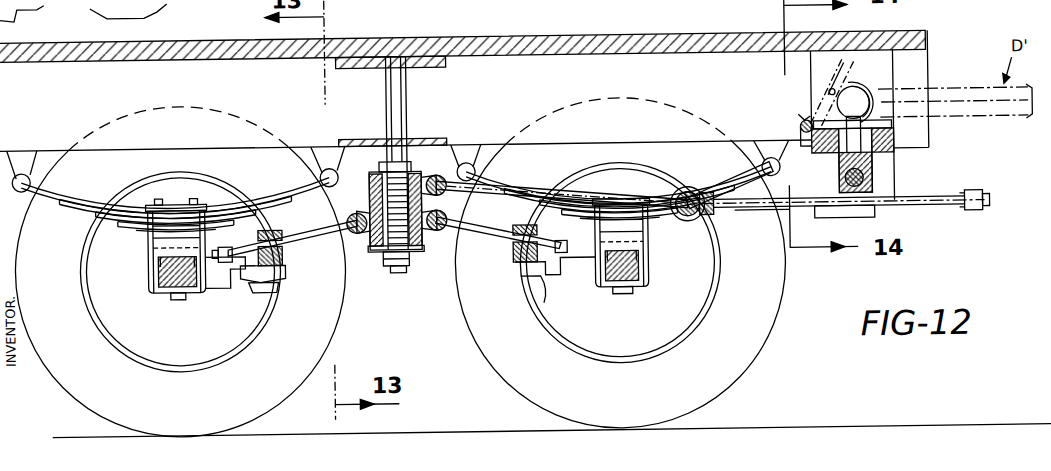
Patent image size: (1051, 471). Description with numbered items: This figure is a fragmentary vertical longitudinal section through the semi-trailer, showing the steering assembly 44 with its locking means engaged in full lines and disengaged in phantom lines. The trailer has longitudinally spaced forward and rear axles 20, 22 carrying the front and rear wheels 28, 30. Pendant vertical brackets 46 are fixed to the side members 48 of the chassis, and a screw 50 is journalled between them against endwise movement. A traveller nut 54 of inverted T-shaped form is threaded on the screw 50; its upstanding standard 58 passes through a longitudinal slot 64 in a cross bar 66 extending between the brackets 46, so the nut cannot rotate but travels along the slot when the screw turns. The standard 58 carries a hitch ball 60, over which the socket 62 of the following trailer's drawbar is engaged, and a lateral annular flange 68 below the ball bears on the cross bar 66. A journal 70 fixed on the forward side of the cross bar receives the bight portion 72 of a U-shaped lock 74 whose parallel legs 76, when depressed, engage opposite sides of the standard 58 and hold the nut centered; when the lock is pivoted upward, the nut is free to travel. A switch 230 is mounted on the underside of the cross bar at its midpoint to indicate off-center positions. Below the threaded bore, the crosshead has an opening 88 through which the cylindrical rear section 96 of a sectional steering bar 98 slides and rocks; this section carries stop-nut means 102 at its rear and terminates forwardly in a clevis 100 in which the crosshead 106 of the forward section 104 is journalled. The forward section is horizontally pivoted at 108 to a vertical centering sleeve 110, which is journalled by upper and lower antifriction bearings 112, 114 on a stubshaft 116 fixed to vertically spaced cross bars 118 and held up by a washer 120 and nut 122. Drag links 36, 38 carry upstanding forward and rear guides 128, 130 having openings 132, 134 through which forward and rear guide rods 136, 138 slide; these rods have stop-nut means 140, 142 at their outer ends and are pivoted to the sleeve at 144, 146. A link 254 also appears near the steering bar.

The forward axle 20 is at (160, 268).
The rear axle 22 is at (640, 266).
The front wheel 28 is at (333, 347).
The rear wheel 30 is at (762, 364).
The drag link 36 is at (280, 284).
The drag link 38 is at (541, 280).
The steering assembly 44 is at (963, 149).
The pendant vertical brackets 46 is at (897, 64).
The side members 48 is at (494, 95).
The screw 50 is at (866, 180).
The traveller nut 54 is at (878, 190).
The standard 58 is at (897, 148).
The hitch ball 60 is at (873, 104).
The socket 62 is at (850, 74).
The longitudinal slot 64 is at (897, 156).
The cross bar 66 is at (895, 130).
The lateral annular flange 68 is at (878, 120).
The journal 70 is at (801, 132).
The bight portion 72 is at (801, 121).
The U-shaped lock 74 is at (820, 91).
The legs 76 is at (830, 97).
The opening 88 is at (857, 211).
The rear section 96 is at (772, 214).
The sectional steering bar 98 is at (660, 175).
The clevis 100 is at (712, 218).
The stop-nut means 102 is at (975, 218).
The forward section 104 is at (595, 190).
The crosshead 106 is at (688, 189).
The horizontal pivot 108 is at (442, 176).
The vertical centering sleeve 110 is at (372, 247).
The upper antifriction bearing 112 is at (343, 139).
The lower antifriction bearing 114 is at (422, 246).
The stubshaft 116 is at (400, 272).
The cross bars 118 is at (446, 67).
The washer 120 is at (385, 265).
The nut 122 is at (410, 265).
The forward guide 128 is at (283, 252).
The rear guide 130 is at (515, 256).
The opening 132 is at (290, 197).
The opening 134 is at (449, 219).
The forward guide rod 136 is at (286, 268).
The rear guide rod 138 is at (513, 234).
The stop-nut means 140 is at (230, 285).
The stop-nut means 142 is at (606, 295).
The horizontal pivot 144 is at (355, 211).
The horizontal pivot 146 is at (490, 188).
The switch 230 is at (806, 214).
The spring link 254 is at (728, 184).